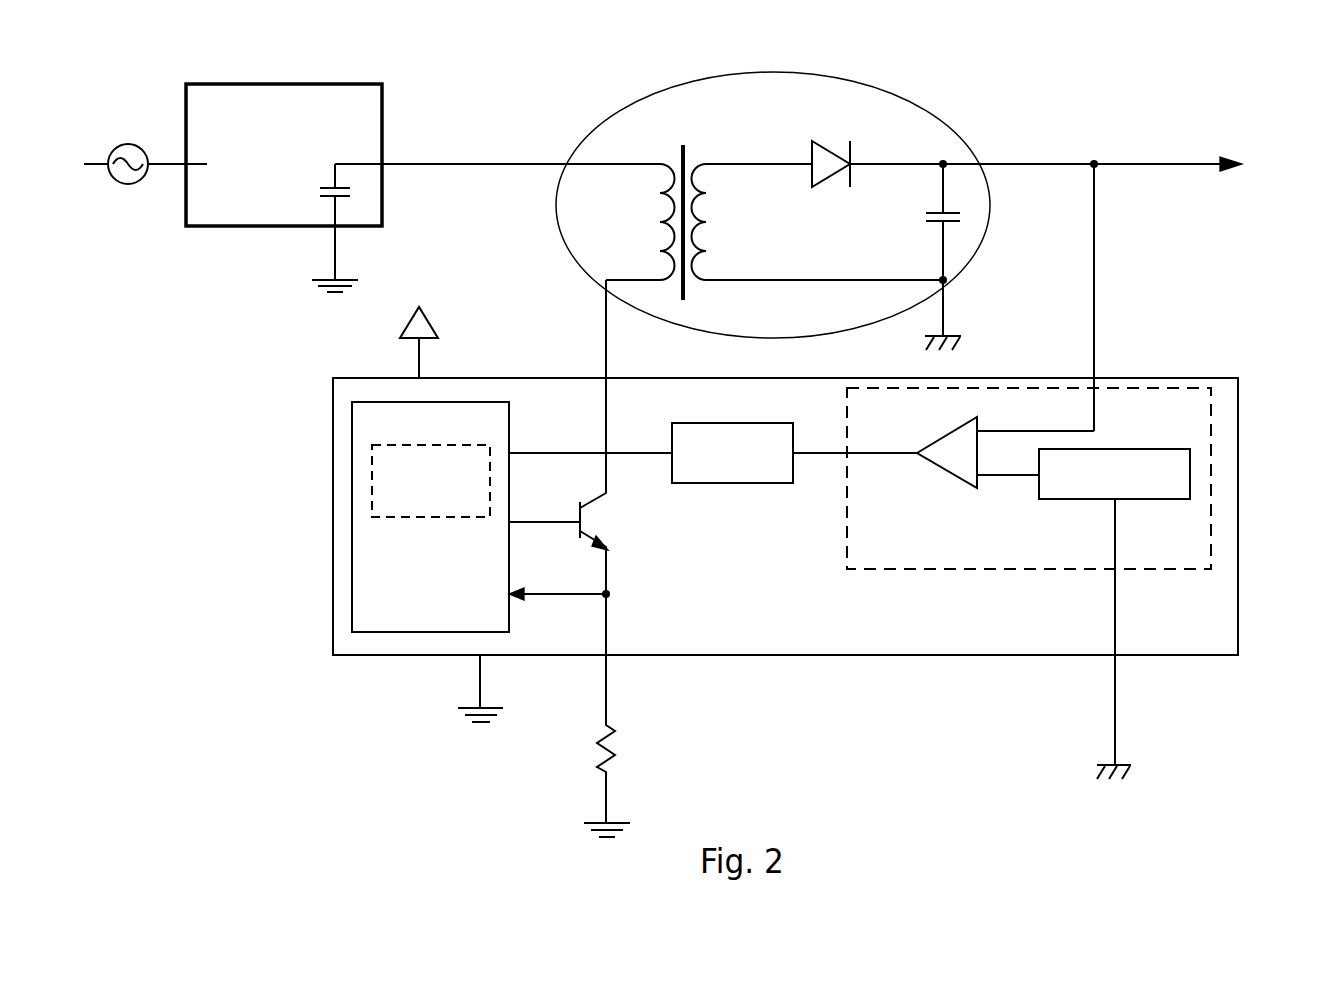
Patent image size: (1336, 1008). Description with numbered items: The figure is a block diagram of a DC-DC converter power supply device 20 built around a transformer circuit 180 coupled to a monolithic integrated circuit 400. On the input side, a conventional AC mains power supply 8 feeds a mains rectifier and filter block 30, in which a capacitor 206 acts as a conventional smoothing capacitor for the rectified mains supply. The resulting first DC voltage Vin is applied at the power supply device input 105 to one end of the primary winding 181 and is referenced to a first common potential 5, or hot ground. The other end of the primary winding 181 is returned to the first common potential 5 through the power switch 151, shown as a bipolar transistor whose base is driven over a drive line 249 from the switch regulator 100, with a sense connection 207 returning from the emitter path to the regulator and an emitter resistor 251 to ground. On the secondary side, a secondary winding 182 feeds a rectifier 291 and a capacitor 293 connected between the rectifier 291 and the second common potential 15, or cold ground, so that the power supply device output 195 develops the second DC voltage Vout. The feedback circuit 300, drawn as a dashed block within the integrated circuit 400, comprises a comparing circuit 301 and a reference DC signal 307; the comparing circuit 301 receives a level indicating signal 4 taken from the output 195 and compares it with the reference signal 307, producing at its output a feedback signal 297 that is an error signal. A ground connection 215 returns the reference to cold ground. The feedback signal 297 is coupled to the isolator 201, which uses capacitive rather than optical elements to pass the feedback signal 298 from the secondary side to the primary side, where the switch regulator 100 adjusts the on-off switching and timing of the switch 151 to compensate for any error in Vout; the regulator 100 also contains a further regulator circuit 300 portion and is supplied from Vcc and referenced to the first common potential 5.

The power supply device 20 is at (1248, 90).
The AC mains power supply 8 is at (114, 150).
The mains rectifier and filter 30 is at (384, 112).
The capacitor 206 is at (323, 196).
The first common potential 5 is at (336, 262).
The power supply device input 105 is at (492, 163).
The transformer circuit 180 is at (948, 112).
The primary winding 181 is at (662, 222).
The secondary winding 182 is at (704, 222).
The rectifier 291 is at (836, 143).
The capacitor 293 is at (960, 222).
The second common potential 15 is at (962, 338).
The power supply device output 195 is at (1135, 162).
The level indicating signal 4 is at (1094, 300).
The monolithic integrated circuit 400 is at (825, 656).
The switch regulator 100 is at (333, 525).
The feedback circuit 300 is at (400, 517).
The feedback signal 298 is at (580, 453).
The drive signal line 249 is at (520, 521).
The power switch 151 is at (574, 536).
The current sense line 207 is at (530, 594).
The isolator 201 is at (733, 483).
The feedback signal 297 is at (848, 456).
The comparing circuit 301 is at (950, 430).
The reference DC signal 307 is at (1005, 476).
The reference ground line 215 is at (1115, 710).
The sense resistor 251 is at (617, 746).